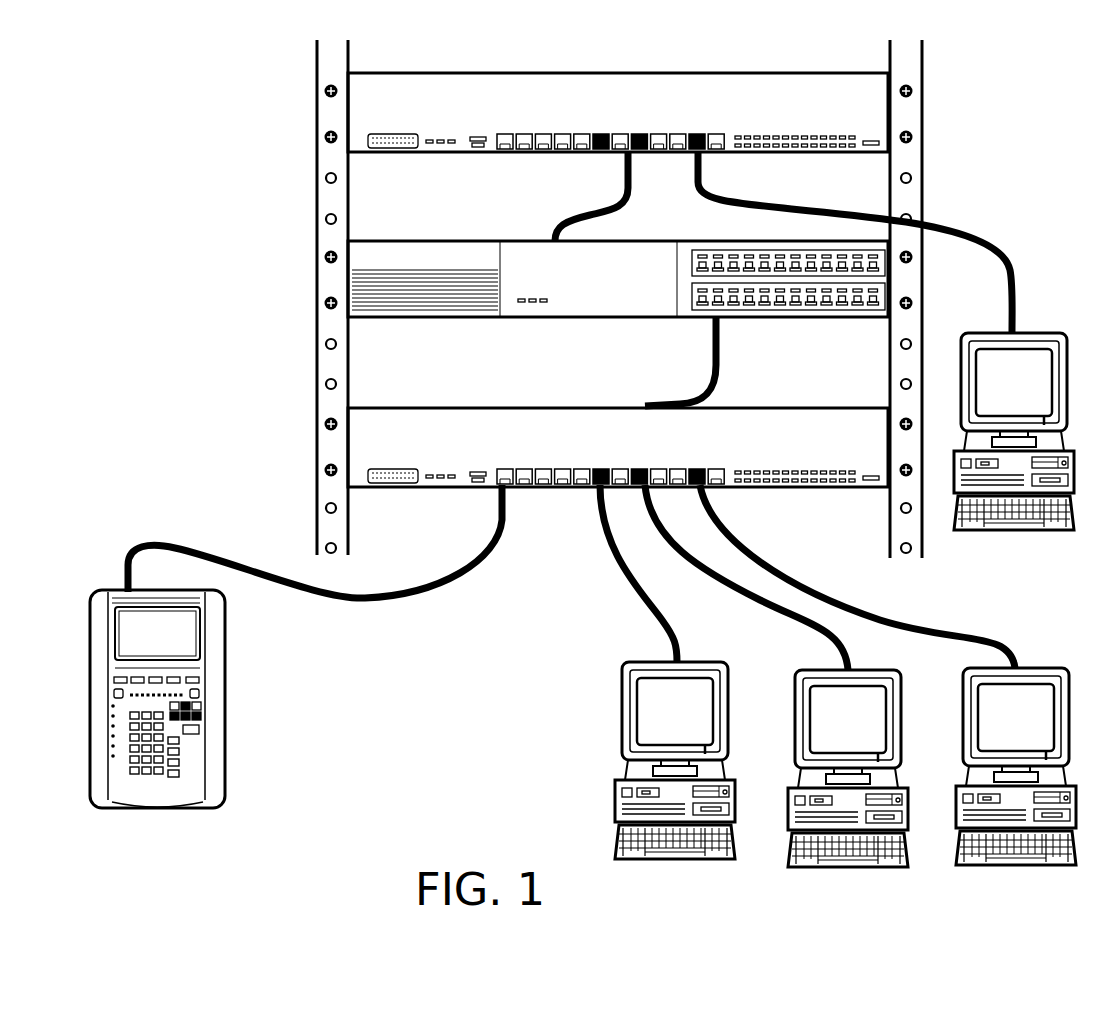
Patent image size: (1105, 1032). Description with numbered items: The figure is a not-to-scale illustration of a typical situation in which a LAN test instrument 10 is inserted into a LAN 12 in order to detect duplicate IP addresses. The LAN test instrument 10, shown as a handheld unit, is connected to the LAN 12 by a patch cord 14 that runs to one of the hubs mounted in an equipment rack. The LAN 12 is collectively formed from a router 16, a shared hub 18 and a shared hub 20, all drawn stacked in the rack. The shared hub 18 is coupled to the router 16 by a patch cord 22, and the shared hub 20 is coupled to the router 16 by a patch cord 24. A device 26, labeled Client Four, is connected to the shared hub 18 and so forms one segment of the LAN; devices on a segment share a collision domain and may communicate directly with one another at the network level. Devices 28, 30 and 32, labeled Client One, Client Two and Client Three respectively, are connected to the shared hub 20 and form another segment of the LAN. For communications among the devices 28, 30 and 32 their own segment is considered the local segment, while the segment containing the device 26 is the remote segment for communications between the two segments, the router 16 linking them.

The LAN test instrument 10 is at (226, 705).
The LAN 12 is at (557, 299).
The patch cord 14 is at (365, 590).
The router 16 is at (645, 240).
The shared hub 18 is at (750, 75).
The shared hub 20 is at (760, 406).
The patch cord 22 is at (556, 238).
The patch cord 24 is at (642, 392).
The device 26 is at (1040, 332).
The device 28 is at (700, 661).
The device 30 is at (868, 669).
The device 32 is at (1040, 667).